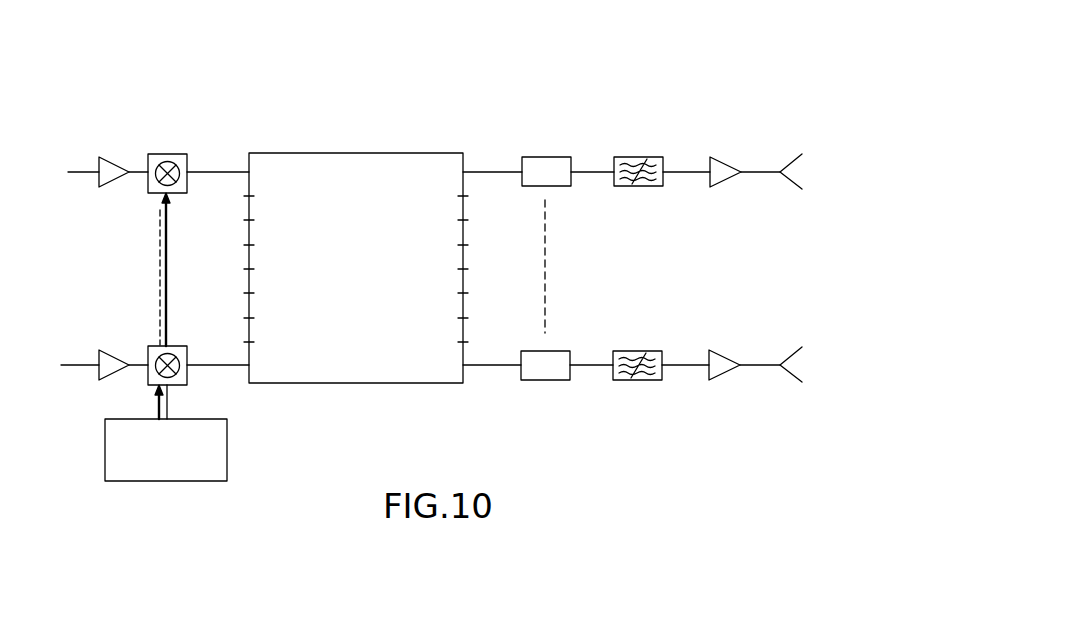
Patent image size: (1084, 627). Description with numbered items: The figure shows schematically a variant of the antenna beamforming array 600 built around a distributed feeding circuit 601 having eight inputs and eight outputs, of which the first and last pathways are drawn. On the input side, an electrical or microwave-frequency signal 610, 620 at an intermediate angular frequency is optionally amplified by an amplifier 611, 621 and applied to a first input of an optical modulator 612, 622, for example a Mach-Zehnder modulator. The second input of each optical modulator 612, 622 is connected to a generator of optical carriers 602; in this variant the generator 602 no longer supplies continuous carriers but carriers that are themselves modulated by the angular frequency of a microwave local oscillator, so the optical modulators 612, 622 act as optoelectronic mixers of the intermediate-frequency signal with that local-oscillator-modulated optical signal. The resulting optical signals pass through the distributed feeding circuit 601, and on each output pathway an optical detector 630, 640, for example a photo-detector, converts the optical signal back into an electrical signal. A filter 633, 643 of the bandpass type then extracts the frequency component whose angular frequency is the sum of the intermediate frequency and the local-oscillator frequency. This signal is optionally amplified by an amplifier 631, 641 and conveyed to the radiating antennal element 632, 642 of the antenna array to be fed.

The antenna beamforming array 600 is at (596, 70).
The distributed feeding circuit 601 is at (338, 272).
The generator of optical carriers 602 is at (149, 457).
The electrical or microwave-frequency signal 610 is at (71, 171).
The amplifier 611 is at (119, 166).
The optical modulator 612 is at (174, 153).
The electrical or microwave-frequency signal 620 is at (70, 363).
The amplifier 621 is at (115, 351).
The optical modulator 622 is at (180, 345).
The optical detector 630 is at (548, 157).
The filter 633 is at (643, 157).
The amplifier 631 is at (730, 160).
The antennal element 632 is at (800, 153).
The optical detector 640 is at (542, 380).
The filter 643 is at (635, 380).
The amplifier 641 is at (727, 378).
The antennal element 642 is at (795, 378).